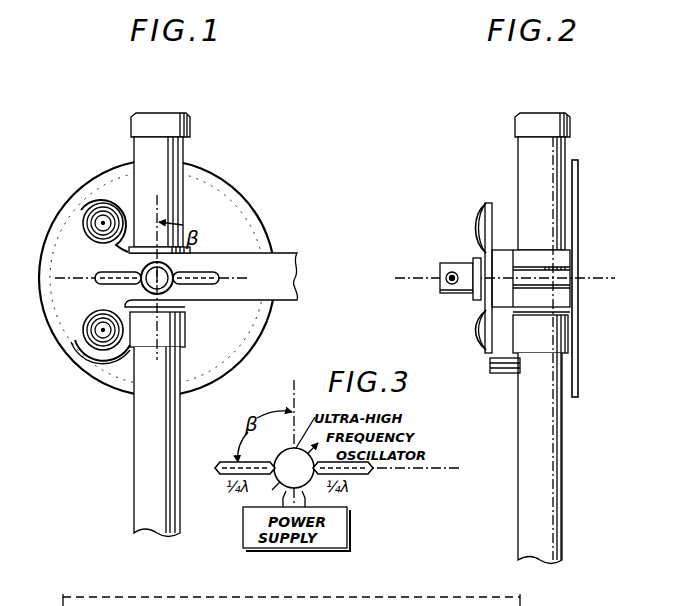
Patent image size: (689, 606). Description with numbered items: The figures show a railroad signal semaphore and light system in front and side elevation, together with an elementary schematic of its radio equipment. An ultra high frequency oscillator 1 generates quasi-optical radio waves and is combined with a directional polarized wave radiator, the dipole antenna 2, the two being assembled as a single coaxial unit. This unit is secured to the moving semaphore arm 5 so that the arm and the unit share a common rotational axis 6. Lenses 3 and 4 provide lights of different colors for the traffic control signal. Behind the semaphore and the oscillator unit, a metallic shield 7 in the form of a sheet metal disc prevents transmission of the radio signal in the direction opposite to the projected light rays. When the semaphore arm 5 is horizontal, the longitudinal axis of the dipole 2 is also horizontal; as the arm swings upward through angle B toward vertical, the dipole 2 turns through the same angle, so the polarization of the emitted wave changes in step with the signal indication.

In FIG. 1, the ultra high frequency oscillator 1 is at (163, 245).
In FIG. 2, the ultra high frequency oscillator 1 is at (438, 276).
In FIG. 3, the ultra high frequency oscillator 1 is at (306, 469).
In FIG. 1, the dipole antenna 2 is at (215, 273).
In FIG. 2, the dipole antenna 2 is at (440, 290).
In FIG. 3, the dipole antenna 2 is at (370, 472).
In FIG. 1, the lens 3 is at (92, 207).
In FIG. 2, the lens 3 is at (480, 218).
In FIG. 1, the lens 4 is at (85, 312).
In FIG. 2, the lens 4 is at (482, 337).
In FIG. 1, the semaphore arm 5 is at (277, 262).
In FIG. 2, the semaphore arm 5 is at (484, 256).
In FIG. 2, the common rotational axis 6 is at (410, 277).
In FIG. 1, the metallic shield 7 is at (214, 168).
In FIG. 2, the metallic shield 7 is at (580, 195).